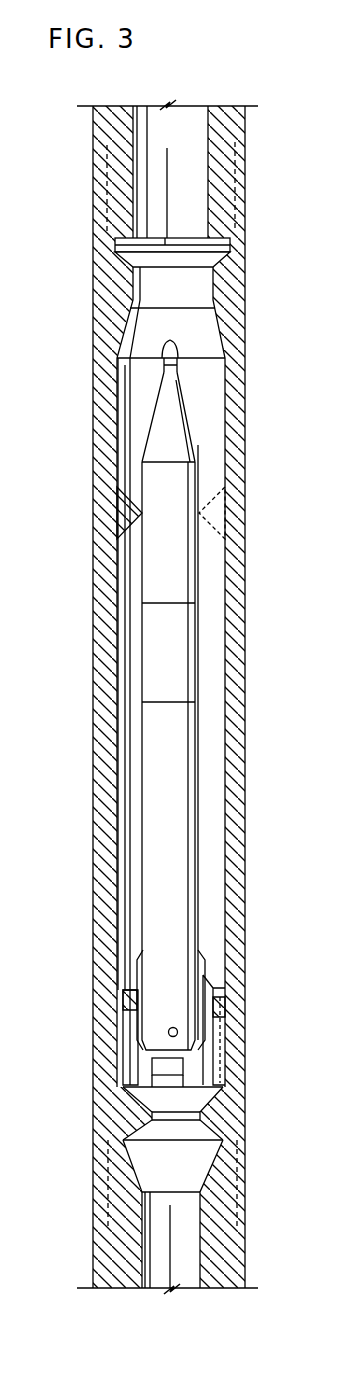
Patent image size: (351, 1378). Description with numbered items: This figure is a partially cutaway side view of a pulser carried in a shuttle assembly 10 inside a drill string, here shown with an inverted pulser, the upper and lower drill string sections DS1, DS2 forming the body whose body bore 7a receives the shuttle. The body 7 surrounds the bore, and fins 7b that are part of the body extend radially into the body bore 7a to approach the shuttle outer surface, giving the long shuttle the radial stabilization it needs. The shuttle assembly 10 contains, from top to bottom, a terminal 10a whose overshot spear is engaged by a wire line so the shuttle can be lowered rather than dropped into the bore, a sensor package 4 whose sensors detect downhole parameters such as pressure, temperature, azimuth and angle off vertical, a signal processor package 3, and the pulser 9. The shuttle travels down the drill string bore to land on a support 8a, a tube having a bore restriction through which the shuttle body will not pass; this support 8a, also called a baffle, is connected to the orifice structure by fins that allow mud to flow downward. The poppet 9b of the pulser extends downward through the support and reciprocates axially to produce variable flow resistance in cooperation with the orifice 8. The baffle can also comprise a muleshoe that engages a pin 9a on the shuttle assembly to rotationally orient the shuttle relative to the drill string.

The upper drill string section DS1 is at (91, 134).
The lower drill string section DS2 is at (86, 1260).
The housing sub 7 is at (90, 311).
The body bore 7a is at (133, 388).
The fins 7b is at (122, 517).
The shuttle assembly 10 is at (169, 708).
The terminal 10a is at (183, 372).
The sensor package 4 is at (178, 551).
The signal processor package 3 is at (178, 664).
The pulser 9 is at (178, 869).
The pin 9a is at (178, 1033).
The poppet 9b is at (180, 1075).
The orifice 8 is at (118, 1117).
The support 8a is at (135, 1036).